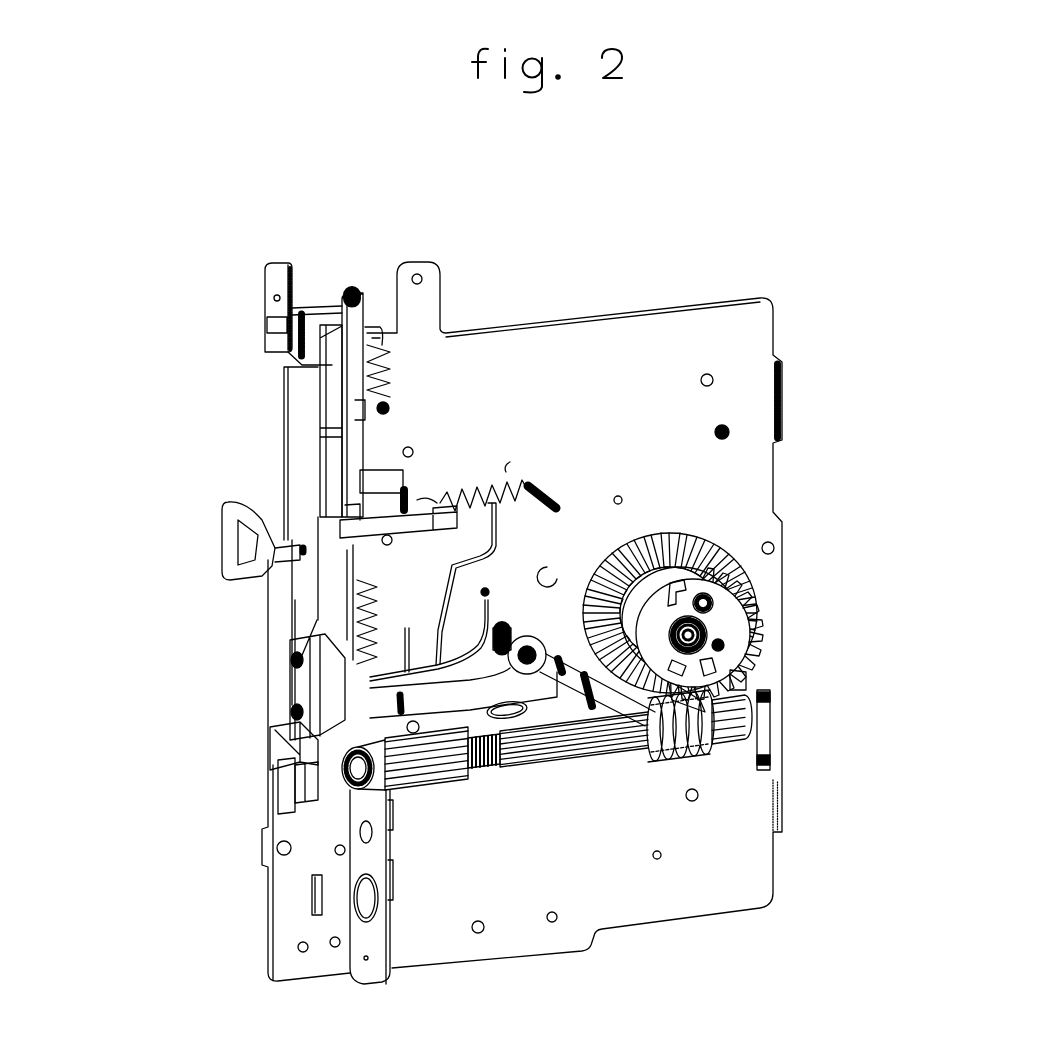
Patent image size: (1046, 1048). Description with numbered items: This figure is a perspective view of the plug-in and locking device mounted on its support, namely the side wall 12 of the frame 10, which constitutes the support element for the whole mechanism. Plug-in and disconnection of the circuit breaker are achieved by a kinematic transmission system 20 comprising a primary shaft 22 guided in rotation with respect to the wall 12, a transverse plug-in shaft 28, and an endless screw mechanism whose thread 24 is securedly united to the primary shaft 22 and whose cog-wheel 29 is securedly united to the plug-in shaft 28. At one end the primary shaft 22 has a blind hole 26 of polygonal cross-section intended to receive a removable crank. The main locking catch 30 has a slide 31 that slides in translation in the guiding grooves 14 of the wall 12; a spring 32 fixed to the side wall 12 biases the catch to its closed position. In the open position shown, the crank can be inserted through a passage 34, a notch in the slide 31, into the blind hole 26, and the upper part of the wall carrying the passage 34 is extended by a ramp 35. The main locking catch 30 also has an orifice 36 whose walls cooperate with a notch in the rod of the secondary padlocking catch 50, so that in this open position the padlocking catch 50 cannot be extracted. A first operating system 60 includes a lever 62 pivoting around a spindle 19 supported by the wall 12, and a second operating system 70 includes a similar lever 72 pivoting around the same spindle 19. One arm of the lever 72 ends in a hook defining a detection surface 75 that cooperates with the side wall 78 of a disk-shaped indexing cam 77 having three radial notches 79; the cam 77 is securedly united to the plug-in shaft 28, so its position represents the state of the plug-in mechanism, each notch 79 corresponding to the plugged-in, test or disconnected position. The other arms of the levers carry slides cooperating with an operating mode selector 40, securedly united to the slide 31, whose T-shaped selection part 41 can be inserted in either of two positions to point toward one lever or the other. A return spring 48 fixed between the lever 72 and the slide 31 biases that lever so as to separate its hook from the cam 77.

The frame 10 is at (618, 313).
The side wall 12 is at (747, 338).
The guiding grooves 14 is at (283, 810).
The spindle 19 is at (527, 660).
The kinematic transmission system 20 is at (503, 777).
The primary shaft 22 is at (562, 748).
The thread 24 is at (675, 700).
The blind hole 26 is at (345, 776).
The plug-in shaft 28 is at (708, 620).
The cog-wheel 29 is at (755, 650).
The main locking catch 30 is at (320, 437).
The slide 31 is at (333, 368).
The spring 32 is at (386, 404).
The passage 34 is at (303, 780).
The ramp 35 is at (273, 733).
The orifice 36 is at (345, 505).
The operating mode selector 40 is at (82, 606).
The selection part 41 is at (278, 673).
The return spring 48 is at (360, 612).
The secondary padlocking catch 50 is at (222, 558).
The first operating system 60 is at (498, 620).
The lever 62 is at (423, 677).
The second operating system 70 is at (548, 626).
The lever 72 is at (473, 683).
The detection surface 75 is at (675, 685).
The indexing cam 77 is at (700, 593).
The side wall 78 is at (660, 595).
The radial notches 79 is at (735, 675).